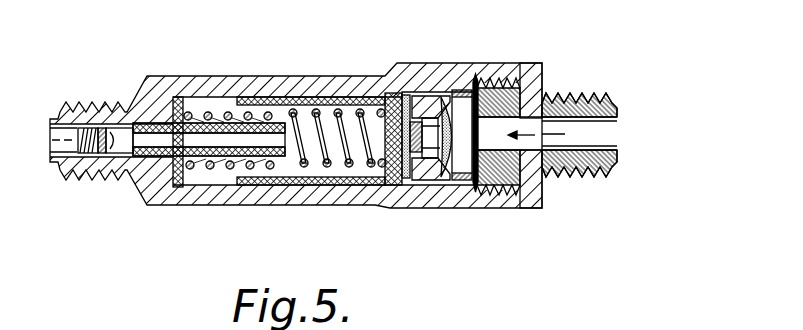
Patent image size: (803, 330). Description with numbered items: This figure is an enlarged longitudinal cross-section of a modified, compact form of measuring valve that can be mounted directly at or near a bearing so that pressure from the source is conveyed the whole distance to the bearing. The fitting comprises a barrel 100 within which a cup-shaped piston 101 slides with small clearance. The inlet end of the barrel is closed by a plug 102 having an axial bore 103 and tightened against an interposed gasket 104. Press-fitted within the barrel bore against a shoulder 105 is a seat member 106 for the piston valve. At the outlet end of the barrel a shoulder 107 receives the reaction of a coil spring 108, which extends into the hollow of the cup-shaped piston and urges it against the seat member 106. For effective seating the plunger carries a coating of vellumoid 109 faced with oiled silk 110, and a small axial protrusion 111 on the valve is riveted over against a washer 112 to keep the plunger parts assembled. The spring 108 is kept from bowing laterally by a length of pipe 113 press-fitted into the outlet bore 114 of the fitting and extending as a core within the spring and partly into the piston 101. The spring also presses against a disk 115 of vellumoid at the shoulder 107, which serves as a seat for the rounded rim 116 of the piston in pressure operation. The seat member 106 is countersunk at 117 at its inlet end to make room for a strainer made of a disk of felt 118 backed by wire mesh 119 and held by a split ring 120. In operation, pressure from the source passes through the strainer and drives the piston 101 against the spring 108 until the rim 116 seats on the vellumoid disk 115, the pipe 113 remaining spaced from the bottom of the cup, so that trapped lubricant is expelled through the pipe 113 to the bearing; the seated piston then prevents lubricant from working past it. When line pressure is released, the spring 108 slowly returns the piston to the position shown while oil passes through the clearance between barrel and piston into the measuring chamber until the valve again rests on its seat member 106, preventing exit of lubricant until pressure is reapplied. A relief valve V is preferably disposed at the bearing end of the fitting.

The barrel 100 is at (312, 100).
The cup-shaped piston 101 is at (313, 183).
The plug 102 is at (517, 173).
The axial bore 103 is at (600, 127).
The gasket 104 is at (520, 62).
The shoulder 105 is at (427, 95).
The seat member 106 is at (423, 170).
The shoulder 107 is at (173, 163).
The coil spring 108 is at (292, 116).
The coating of vellumoid 109 is at (412, 90).
The oiled silk 110 is at (407, 173).
The axial protrusion 111 is at (412, 178).
The washer 112 is at (432, 100).
The pipe 113 is at (213, 128).
The outlet bore 114 is at (63, 143).
The disk of vellumoid 115 is at (178, 95).
The rounded rim 116 is at (243, 183).
The countersink 117 is at (440, 83).
The disk of felt 118 is at (457, 133).
The wire mesh 119 is at (455, 107).
The split ring 120 is at (457, 173).
The relief valve V is at (117, 140).